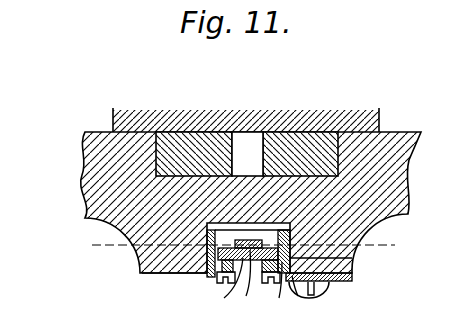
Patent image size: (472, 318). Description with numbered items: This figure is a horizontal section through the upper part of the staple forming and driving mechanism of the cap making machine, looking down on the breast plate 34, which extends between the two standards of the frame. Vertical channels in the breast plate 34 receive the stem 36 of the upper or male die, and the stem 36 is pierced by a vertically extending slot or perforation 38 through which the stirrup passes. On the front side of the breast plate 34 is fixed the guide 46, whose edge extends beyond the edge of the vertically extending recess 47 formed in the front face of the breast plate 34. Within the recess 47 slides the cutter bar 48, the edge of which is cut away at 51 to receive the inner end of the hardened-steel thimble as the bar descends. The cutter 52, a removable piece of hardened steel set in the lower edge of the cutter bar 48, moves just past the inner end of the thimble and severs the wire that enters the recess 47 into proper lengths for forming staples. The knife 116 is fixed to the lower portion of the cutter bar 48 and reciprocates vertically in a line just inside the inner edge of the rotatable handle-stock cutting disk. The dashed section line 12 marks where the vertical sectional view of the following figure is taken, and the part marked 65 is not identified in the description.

The section line 12 is at (243, 245).
The breast plate 34 is at (407, 214).
The stem 36 is at (185, 148).
The vertically extending slot 38 is at (251, 140).
The guide 46 is at (330, 285).
The vertically extending recess 47 is at (353, 268).
The sliding cutter bar 48 is at (284, 292).
The recess of cutter bar 51 is at (185, 274).
The cutter 52 is at (226, 238).
The contact assembly 65 is at (250, 285).
The knife 116 is at (239, 284).